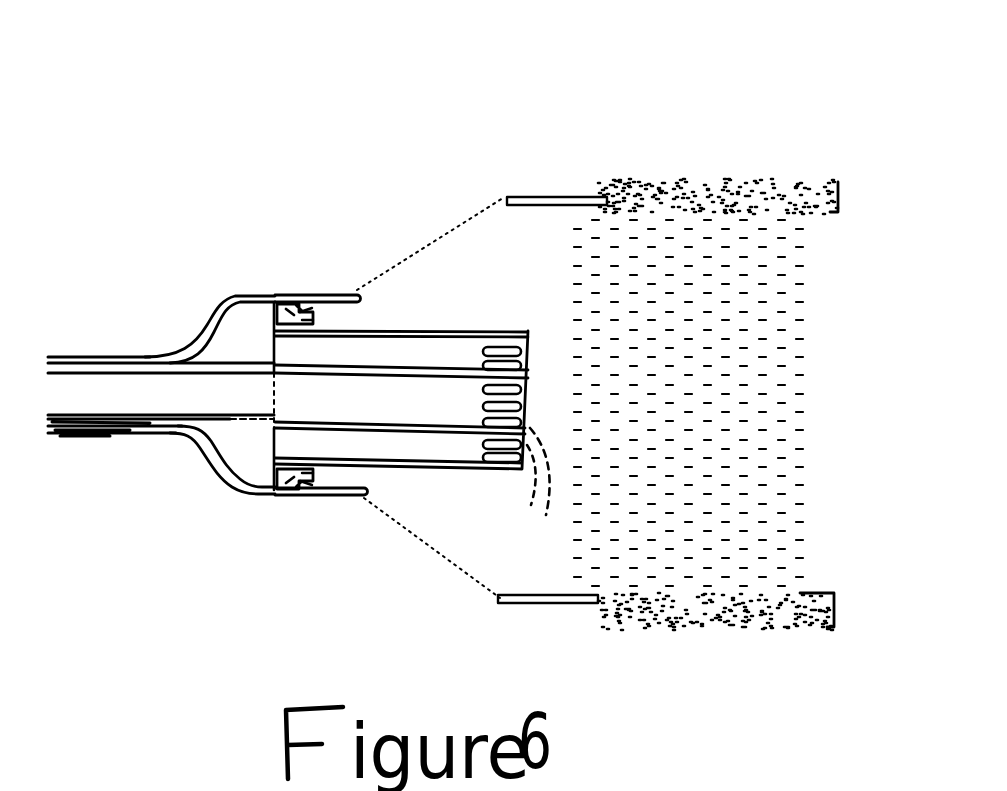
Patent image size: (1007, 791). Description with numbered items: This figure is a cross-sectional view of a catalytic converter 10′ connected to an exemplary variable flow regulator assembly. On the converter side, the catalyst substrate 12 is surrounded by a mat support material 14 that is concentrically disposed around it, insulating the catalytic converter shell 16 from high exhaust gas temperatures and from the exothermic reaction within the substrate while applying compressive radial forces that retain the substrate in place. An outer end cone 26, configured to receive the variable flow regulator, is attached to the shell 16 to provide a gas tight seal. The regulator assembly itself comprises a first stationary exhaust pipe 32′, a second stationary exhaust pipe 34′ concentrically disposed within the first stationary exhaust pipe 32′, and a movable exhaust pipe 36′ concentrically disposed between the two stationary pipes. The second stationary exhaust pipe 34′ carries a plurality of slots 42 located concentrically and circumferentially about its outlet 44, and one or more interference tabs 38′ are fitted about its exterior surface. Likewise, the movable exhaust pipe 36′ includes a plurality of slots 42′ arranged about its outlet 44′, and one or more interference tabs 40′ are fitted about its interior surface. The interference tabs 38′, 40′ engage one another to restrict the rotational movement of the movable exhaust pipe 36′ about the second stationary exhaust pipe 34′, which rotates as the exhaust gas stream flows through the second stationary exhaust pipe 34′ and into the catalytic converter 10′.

The catalytic converter 10′ is at (522, 149).
The catalyst substrate 12 is at (772, 396).
The mat support material 14 is at (840, 210).
The catalytic converter shell 16 is at (732, 178).
The outer end cone 26 is at (421, 222).
The first stationary exhaust pipe 32′ is at (233, 296).
The second stationary exhaust pipe 34′ is at (225, 430).
The movable exhaust pipe 36′ is at (440, 468).
The interference tabs 38′ is at (331, 300).
The interference tabs 40′ is at (318, 321).
The slots 42 is at (521, 411).
The slots 42′ is at (513, 363).
The outlet 44 is at (547, 478).
The outlet 44′ is at (523, 502).